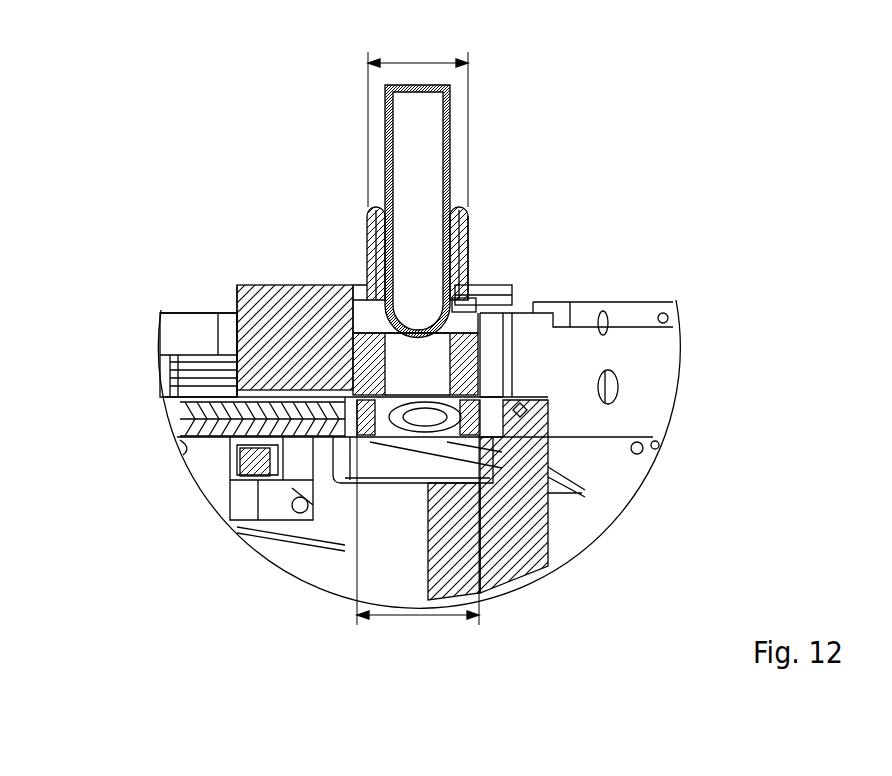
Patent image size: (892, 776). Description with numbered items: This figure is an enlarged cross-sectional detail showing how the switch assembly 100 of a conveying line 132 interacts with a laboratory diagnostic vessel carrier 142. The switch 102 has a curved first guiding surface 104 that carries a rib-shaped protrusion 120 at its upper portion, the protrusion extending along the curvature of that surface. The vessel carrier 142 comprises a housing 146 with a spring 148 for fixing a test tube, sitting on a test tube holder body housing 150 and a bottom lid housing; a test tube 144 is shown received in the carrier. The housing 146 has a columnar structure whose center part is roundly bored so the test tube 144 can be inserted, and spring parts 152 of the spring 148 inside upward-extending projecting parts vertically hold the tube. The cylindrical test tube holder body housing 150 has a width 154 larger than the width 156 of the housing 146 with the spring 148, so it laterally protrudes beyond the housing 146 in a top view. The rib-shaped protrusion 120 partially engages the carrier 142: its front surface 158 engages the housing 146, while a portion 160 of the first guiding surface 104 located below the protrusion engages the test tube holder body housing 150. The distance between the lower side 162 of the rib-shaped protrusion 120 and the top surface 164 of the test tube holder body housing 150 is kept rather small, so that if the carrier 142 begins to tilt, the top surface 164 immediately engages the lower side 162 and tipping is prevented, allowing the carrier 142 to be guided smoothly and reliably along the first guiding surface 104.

The switch assembly 100 is at (195, 330).
The switch 102 is at (120, 320).
The curved first guiding surface 104 is at (505, 385).
The rib-shaped protrusion 120 is at (360, 287).
The conveying line 132 is at (668, 252).
The laboratory diagnostic vessel carrier 142 is at (470, 272).
The tube 144 is at (452, 125).
The housing 146 is at (468, 222).
The spring 148 is at (367, 245).
The test tube holder body housing 150 is at (480, 355).
The spring parts 152 is at (468, 250).
The width 154 is at (418, 620).
The width 156 is at (418, 60).
The front surface 158 is at (513, 295).
The portion 160 is at (170, 365).
The lower side 162 is at (240, 300).
The top surface 164 is at (285, 288).